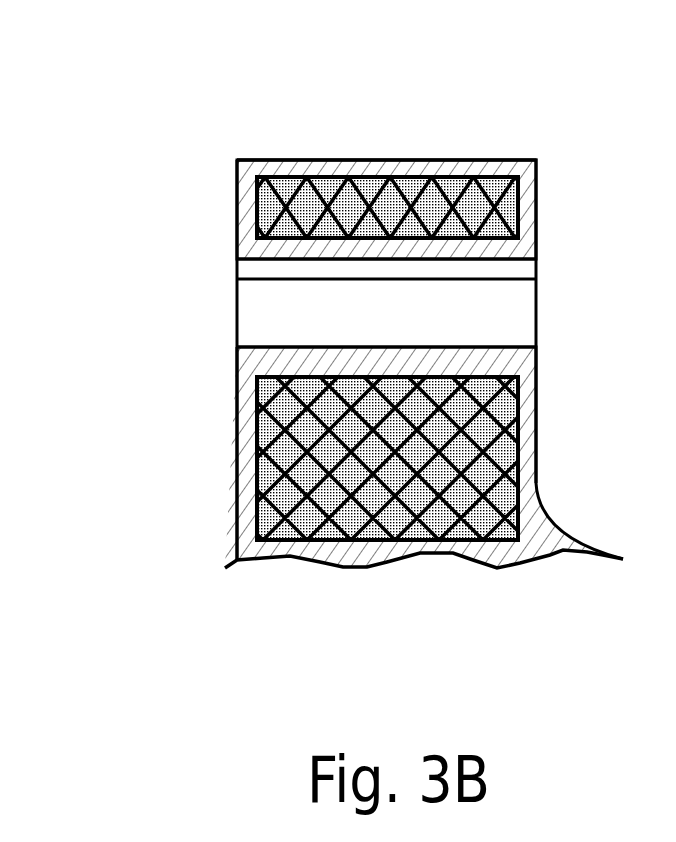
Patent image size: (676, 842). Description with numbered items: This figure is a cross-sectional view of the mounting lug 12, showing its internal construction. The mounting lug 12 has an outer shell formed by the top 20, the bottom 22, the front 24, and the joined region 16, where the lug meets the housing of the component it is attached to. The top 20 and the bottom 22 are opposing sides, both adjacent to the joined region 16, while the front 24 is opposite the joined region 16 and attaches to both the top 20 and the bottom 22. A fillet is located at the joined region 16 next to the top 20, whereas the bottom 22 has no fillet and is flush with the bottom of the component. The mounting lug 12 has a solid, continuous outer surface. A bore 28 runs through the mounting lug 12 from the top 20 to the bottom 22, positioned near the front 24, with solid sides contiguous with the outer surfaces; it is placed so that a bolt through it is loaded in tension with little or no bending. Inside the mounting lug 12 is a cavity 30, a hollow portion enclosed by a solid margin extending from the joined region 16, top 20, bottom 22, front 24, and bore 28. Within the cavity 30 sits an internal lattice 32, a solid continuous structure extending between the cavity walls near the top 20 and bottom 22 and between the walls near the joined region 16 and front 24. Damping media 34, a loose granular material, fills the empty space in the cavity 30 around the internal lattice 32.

The mounting lug 12 is at (451, 109).
The joined region 16 is at (382, 567).
The top 20 is at (537, 208).
The bottom 22 is at (237, 422).
The front 24 is at (303, 160).
The bore 28 is at (292, 315).
The cavity 30 is at (402, 172).
The internal lattice 32 is at (485, 192).
The damping media 34 is at (262, 204).